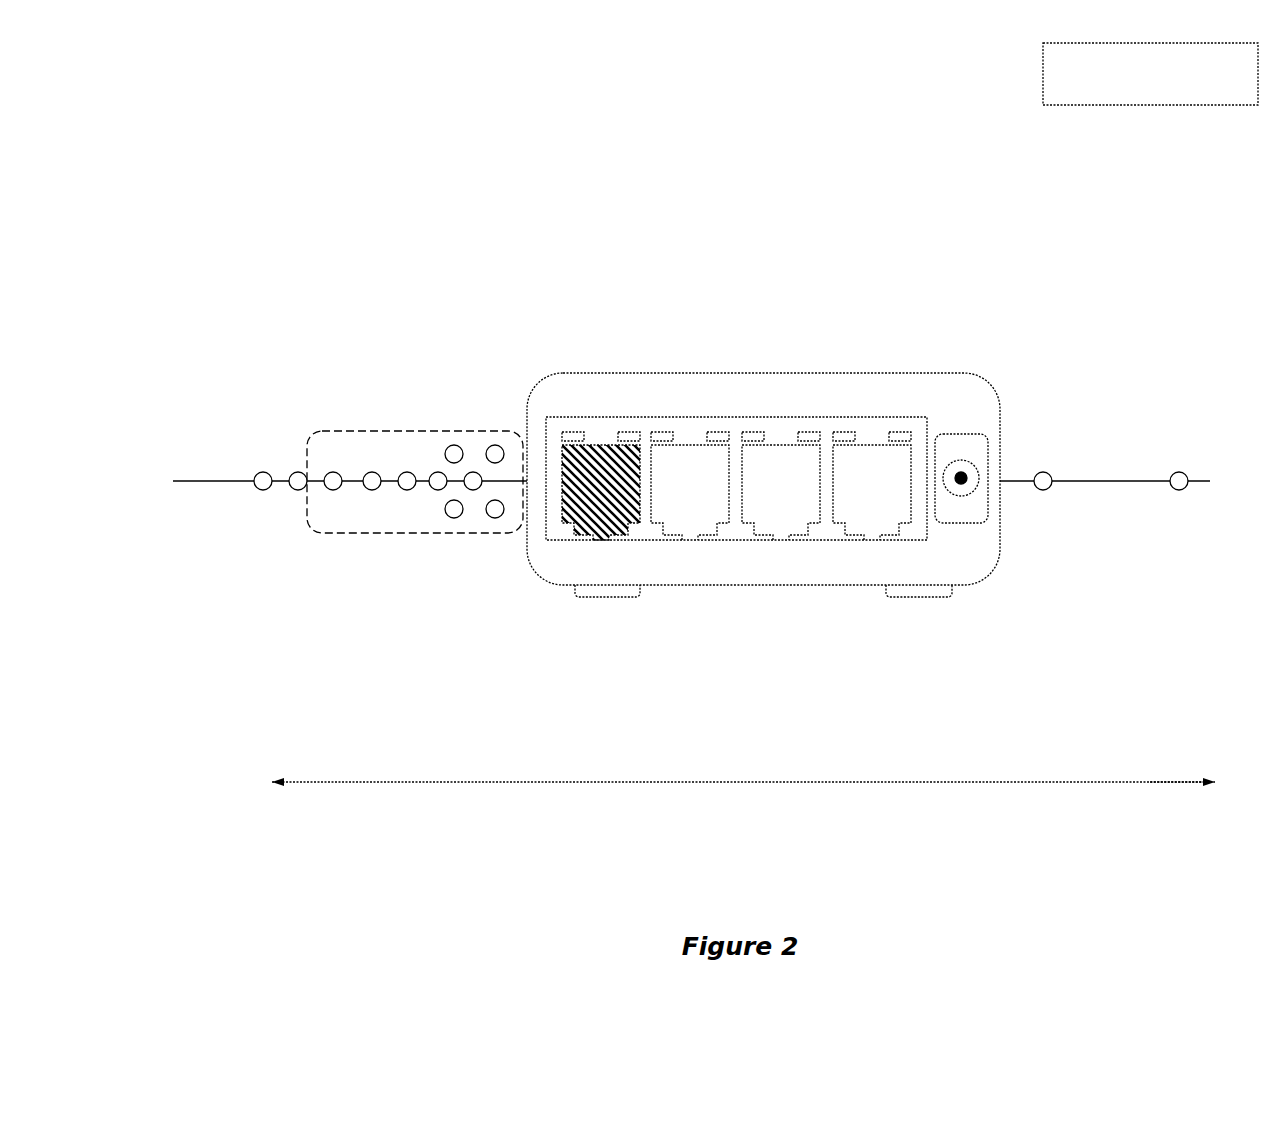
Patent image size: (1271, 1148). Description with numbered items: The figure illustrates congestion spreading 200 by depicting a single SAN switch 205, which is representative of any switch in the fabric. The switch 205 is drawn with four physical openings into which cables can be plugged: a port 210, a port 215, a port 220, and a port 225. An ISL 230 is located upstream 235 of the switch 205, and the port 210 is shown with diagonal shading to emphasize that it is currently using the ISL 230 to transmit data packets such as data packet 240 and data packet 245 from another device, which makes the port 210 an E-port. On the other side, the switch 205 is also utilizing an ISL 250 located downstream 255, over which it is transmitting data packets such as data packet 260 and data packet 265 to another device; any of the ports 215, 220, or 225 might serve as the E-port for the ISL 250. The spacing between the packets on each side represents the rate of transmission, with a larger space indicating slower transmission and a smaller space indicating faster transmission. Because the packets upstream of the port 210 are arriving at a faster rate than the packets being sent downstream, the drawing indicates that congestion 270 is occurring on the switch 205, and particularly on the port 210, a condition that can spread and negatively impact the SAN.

The congestion spreading 200 is at (1150, 74).
The switch 205 is at (703, 457).
The port 210 is at (523, 556).
The port 215 is at (666, 582).
The port 220 is at (777, 582).
The port 225 is at (879, 582).
The ISL 230 is at (350, 394).
The upstream 235 is at (710, 826).
The data packet 240 is at (285, 561).
The data packet 245 is at (332, 596).
The ISL 250 is at (1105, 394).
The downstream 255 is at (1201, 826).
The data packet 260 is at (1065, 561).
The data packet 265 is at (1215, 561).
The congestion 270 is at (388, 420).